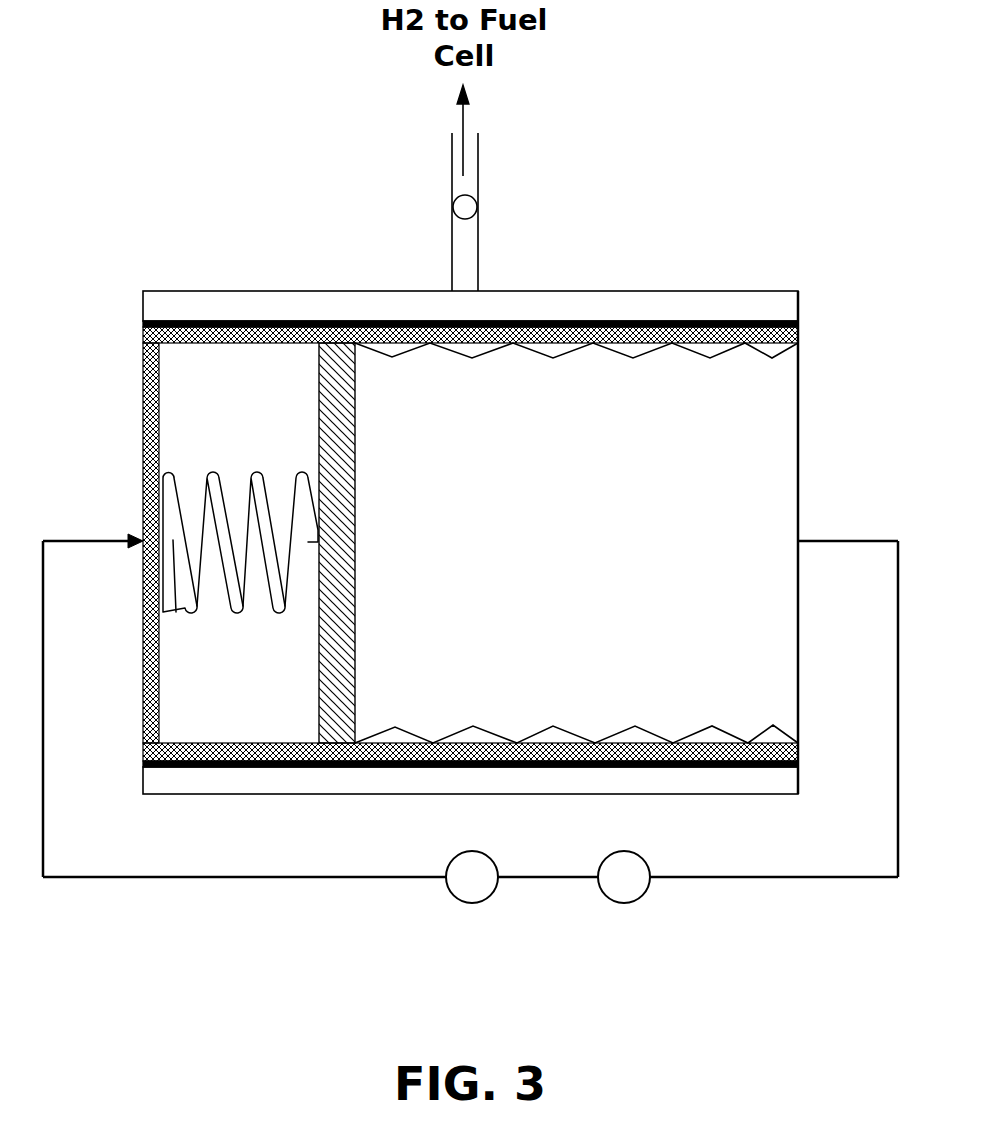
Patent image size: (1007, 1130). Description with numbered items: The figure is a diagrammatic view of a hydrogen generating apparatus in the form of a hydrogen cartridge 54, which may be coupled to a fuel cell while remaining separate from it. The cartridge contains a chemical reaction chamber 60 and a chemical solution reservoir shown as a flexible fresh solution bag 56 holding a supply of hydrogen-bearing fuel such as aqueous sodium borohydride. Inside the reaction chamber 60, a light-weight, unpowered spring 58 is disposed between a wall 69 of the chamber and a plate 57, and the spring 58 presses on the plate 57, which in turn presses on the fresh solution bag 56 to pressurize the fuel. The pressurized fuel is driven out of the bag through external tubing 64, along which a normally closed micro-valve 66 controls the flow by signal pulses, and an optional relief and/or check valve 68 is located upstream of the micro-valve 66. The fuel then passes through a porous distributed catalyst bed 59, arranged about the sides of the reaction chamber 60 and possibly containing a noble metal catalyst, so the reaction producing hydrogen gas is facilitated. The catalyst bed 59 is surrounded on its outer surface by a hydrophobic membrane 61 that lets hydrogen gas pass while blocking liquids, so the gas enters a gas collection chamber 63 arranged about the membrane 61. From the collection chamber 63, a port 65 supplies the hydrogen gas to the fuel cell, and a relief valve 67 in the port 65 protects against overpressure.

The hydrogen cartridge 54 is at (666, 187).
The fresh solution bag 56 is at (698, 352).
The plate 57 is at (355, 510).
The spring 58 is at (208, 471).
The distributed catalyst bed 59 is at (143, 380).
The chemical reaction chamber 60 is at (239, 543).
The hydrophobic membrane 61 is at (785, 322).
The gas collection chamber 63 is at (735, 291).
The tubing 64 is at (846, 541).
The port 65 is at (478, 258).
The micro-valve 66 is at (472, 903).
The relief valve 67 is at (477, 205).
The relief and/or check valve 68 is at (624, 903).
The wall 69 is at (162, 717).